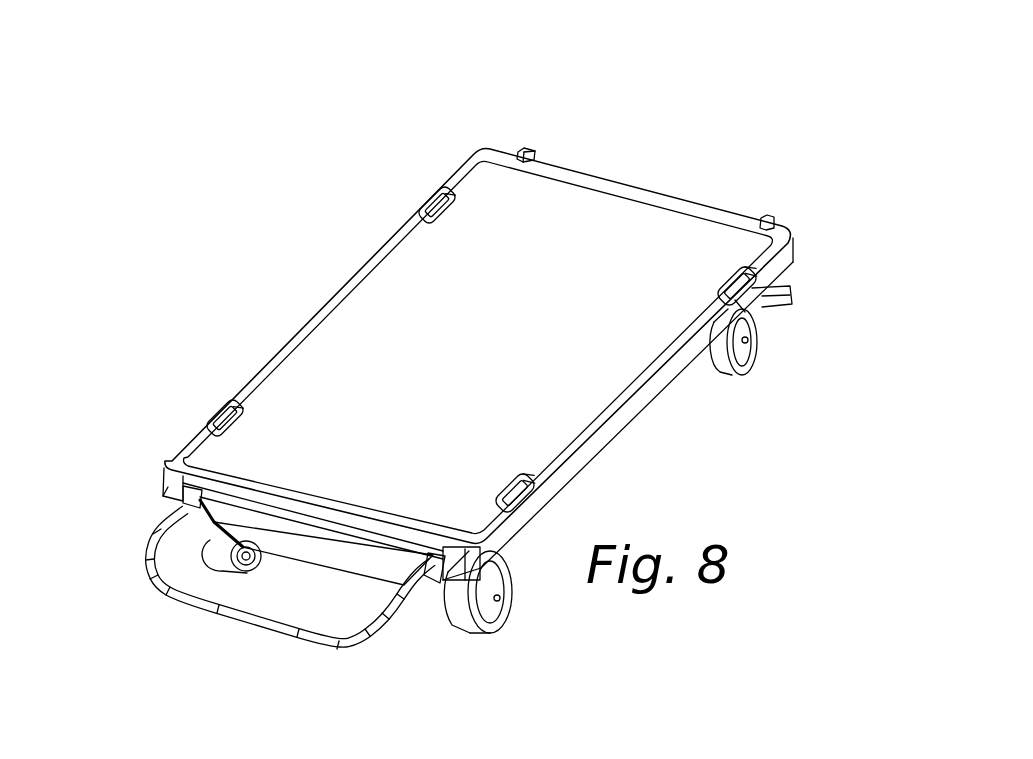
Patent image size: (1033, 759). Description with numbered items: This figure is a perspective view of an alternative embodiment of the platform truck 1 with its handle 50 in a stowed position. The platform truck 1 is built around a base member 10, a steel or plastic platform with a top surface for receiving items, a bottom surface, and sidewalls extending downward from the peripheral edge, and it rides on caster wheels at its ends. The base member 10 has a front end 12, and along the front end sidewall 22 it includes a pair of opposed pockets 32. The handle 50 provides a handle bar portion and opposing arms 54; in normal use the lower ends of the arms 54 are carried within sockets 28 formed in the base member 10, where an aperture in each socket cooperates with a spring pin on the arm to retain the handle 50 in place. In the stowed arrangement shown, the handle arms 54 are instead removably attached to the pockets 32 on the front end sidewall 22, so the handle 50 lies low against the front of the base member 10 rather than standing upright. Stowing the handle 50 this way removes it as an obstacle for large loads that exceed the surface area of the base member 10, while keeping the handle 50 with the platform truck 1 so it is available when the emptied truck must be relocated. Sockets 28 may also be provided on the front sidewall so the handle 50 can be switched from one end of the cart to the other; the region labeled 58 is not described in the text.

The platform truck 1 is at (326, 178).
The base member 10 is at (260, 370).
The front end 12 is at (225, 507).
The front end sidewall 22 is at (287, 525).
The sockets 28 is at (526, 150).
The pockets 32 is at (165, 478).
The handle 50 is at (242, 617).
The arms 54 is at (170, 523).
The handle bend portion 58 is at (370, 640).